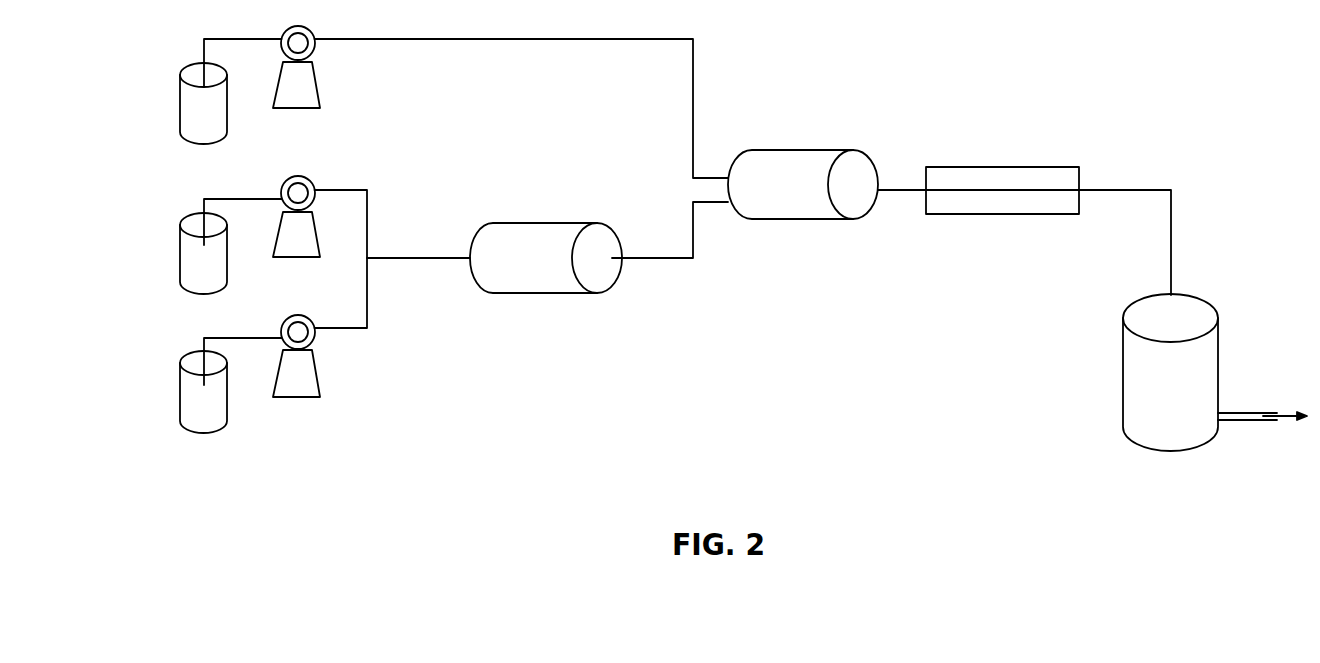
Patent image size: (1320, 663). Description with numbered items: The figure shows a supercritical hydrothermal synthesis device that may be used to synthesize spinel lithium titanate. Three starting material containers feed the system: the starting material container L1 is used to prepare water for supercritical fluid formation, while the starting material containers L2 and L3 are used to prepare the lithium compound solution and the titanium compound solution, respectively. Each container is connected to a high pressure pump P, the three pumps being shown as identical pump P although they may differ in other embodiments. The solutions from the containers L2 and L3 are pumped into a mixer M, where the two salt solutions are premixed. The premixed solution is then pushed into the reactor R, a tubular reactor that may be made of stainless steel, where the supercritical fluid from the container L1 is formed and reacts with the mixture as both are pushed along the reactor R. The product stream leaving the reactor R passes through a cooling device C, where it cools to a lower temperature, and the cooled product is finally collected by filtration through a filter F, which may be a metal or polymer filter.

The starting material container L1 is at (198, 91).
The starting material container L2 is at (198, 246).
The starting material container L3 is at (198, 385).
The high pressure pump P is at (296, 235).
The mixer M is at (546, 230).
The reactor R is at (803, 159).
The cooling device C is at (1002, 155).
The filter F is at (1187, 372).